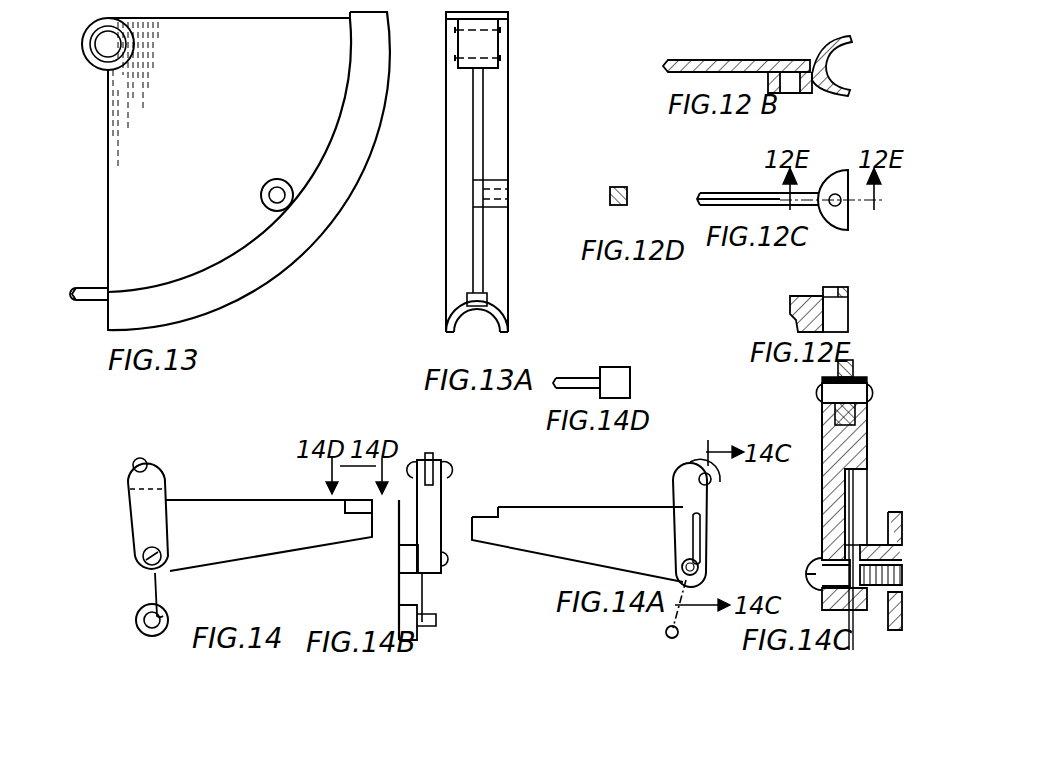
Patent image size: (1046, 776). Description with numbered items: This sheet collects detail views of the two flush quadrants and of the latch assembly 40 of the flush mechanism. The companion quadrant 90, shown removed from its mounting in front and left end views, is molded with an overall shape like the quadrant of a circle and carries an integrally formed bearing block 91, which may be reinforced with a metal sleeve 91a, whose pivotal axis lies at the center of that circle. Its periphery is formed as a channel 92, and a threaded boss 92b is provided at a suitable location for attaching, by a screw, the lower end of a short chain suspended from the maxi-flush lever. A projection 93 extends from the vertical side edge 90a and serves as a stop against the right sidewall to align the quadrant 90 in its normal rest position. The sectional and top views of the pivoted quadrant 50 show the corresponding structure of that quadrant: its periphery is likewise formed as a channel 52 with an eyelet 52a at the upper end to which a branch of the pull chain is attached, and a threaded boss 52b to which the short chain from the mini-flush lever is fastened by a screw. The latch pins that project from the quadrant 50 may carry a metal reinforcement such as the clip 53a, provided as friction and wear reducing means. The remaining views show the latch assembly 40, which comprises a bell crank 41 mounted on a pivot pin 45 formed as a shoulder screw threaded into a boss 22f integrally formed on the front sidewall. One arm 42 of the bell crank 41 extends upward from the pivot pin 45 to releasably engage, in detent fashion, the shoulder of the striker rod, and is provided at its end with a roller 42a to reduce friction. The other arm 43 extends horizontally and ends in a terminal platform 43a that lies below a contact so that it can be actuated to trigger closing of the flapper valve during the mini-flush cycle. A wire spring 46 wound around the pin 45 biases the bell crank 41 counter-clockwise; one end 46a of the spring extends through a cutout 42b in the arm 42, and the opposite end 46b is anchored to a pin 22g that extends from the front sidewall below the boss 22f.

In FIG. 13, the companion quadrant 90 is at (278, 54).
In FIG. 13, the vertical side edge 90a is at (108, 208).
In FIG. 13, the bearing block 91 is at (96, 26).
In FIG. 13A, the bearing block 91 is at (486, 55).
In FIG. 13A, the metal sleeve 91a is at (476, 30).
In FIG. 13, the channel 92 is at (349, 158).
In FIG. 13A, the channel 92 is at (465, 314).
In FIG. 13, the threaded boss 92b is at (262, 202).
In FIG. 13A, the threaded boss 92b is at (508, 201).
In FIG. 13, the projection 93 is at (82, 298).
In FIG. 12B, the pivoted quadrant 50 is at (726, 60).
In FIG. 12C, the pivoted quadrant 50 is at (731, 195).
In FIG. 12B, the channel 52 is at (826, 56).
In FIG. 12E, the channel 52 is at (836, 320).
In FIG. 12C, the eyelet 52a is at (840, 186).
In FIG. 12E, the eyelet 52a is at (843, 290).
In FIG. 12B, the threaded boss 52b is at (806, 93).
In FIG. 12D, the clip 53a is at (620, 206).
In FIG. 14, the latch assembly 40 is at (214, 498).
In FIG. 14, the bell crank 41 is at (184, 508).
In FIG. 14, the arm 42 is at (140, 525).
In FIG. 14B, the arm 42 is at (436, 498).
In FIG. 14A, the arm 42 is at (706, 518).
In FIG. 14C, the arm 42 is at (860, 446).
In FIG. 14, the roller 42a is at (120, 470).
In FIG. 14C, the roller 42a is at (854, 368).
In FIG. 14C, the cutout 42b is at (860, 497).
In FIG. 14, the arm 43 is at (238, 512).
In FIG. 14A, the arm 43 is at (573, 520).
In FIG. 14D, the terminal platform 43a is at (617, 385).
In FIG. 14A, the terminal platform 43a is at (484, 512).
In FIG. 14A, the pivot pin 45 is at (700, 564).
In FIG. 14C, the pivot pin 45 is at (834, 570).
In FIG. 14C, the wire spring 46 is at (852, 576).
In FIG. 14C, the spring end 46a is at (855, 478).
In FIG. 14, the spring end 46b is at (162, 594).
In FIG. 14B, the spring end 46b is at (426, 592).
In FIG. 14B, the boss 22f is at (408, 566).
In FIG. 14C, the boss 22f is at (876, 560).
In FIG. 14, the pin 22g is at (146, 620).
In FIG. 14B, the pin 22g is at (436, 620).